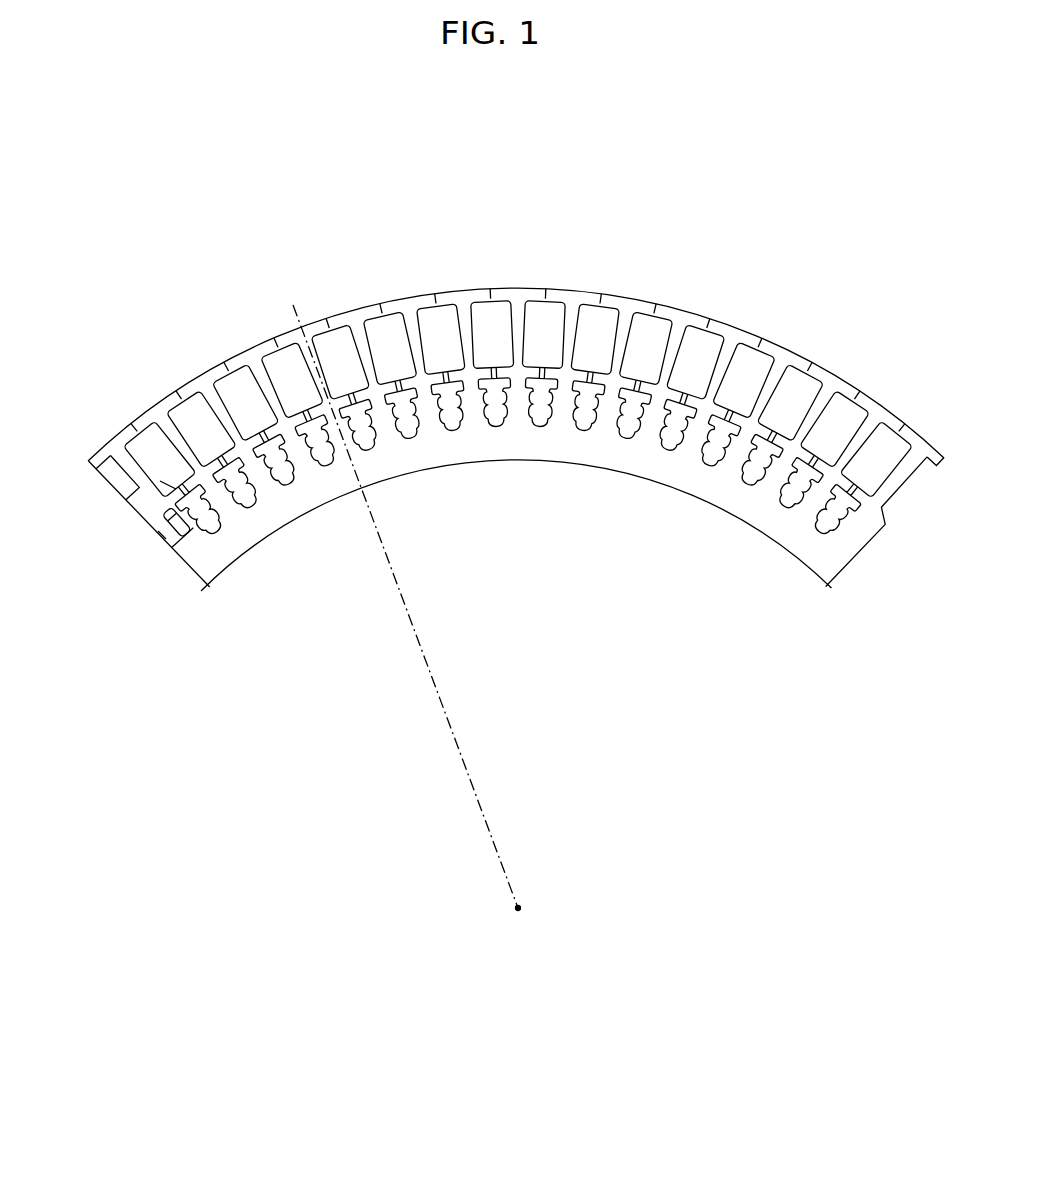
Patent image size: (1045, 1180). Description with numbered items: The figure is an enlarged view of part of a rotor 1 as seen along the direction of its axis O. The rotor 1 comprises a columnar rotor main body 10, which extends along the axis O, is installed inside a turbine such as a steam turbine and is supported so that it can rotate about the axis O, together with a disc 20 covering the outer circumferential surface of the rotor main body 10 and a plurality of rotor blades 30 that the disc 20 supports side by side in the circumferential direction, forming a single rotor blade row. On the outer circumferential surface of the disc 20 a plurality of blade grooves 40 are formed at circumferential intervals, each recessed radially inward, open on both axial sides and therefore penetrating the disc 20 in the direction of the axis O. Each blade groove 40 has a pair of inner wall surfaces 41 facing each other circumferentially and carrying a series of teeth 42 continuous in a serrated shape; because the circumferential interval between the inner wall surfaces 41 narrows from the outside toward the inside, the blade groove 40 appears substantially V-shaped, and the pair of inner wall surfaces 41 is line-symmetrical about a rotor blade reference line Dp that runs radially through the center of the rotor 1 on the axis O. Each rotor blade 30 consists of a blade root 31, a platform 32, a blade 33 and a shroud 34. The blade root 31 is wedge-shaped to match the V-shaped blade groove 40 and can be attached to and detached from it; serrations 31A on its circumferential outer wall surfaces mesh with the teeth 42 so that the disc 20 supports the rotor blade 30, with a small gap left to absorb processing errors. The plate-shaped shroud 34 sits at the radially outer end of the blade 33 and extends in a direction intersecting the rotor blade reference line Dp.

The rotor 1 is at (148, 190).
The rotor main body 10 is at (260, 773).
The disc 20 is at (223, 545).
The rotor blade 30 is at (102, 430).
The blade root 31 is at (197, 548).
The serration 31A is at (163, 537).
The platform 32 is at (177, 483).
The blade 33 is at (120, 463).
The shroud 34 is at (107, 450).
The blade groove 40 is at (178, 540).
The inner wall surface 41 is at (172, 517).
The tooth 42 is at (160, 517).
The rotor blade reference line Dp is at (474, 790).
The axis O is at (520, 911).